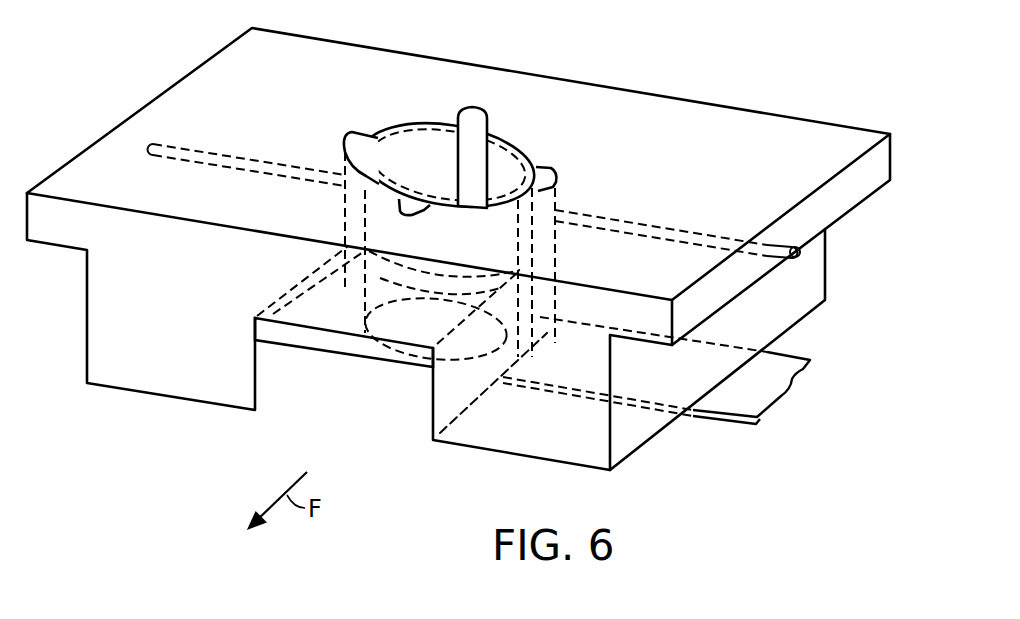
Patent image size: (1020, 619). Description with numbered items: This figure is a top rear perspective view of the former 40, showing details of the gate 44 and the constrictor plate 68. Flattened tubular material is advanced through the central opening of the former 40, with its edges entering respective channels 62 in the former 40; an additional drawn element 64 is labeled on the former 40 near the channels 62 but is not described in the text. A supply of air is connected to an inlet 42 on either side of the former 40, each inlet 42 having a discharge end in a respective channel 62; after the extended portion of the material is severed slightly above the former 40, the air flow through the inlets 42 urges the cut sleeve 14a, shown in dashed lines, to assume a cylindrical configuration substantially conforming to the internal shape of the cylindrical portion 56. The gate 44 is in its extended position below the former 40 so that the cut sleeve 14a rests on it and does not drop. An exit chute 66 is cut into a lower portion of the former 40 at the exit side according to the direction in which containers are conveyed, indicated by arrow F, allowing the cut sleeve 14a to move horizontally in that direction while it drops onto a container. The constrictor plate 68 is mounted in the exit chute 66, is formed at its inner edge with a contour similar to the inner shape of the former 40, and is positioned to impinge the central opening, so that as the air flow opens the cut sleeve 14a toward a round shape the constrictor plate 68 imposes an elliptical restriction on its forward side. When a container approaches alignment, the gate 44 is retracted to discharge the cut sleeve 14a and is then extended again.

The former 40 is at (101, 420).
The inlet 42 is at (781, 259).
The gate 44 is at (725, 421).
The cylindrical portion 56 is at (437, 173).
The channel 62 is at (558, 171).
The key bar 64 is at (492, 112).
The exit chute 66 is at (315, 389).
The constrictor plate 68 is at (378, 358).
The cut sleeve 14a is at (397, 129).